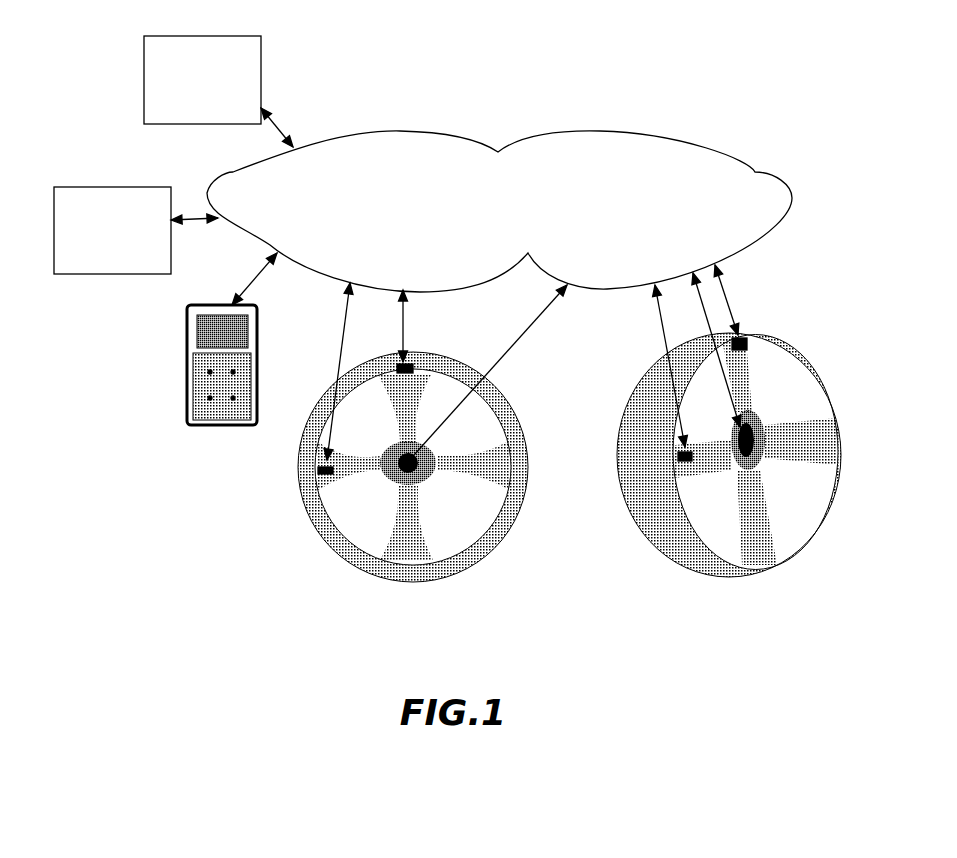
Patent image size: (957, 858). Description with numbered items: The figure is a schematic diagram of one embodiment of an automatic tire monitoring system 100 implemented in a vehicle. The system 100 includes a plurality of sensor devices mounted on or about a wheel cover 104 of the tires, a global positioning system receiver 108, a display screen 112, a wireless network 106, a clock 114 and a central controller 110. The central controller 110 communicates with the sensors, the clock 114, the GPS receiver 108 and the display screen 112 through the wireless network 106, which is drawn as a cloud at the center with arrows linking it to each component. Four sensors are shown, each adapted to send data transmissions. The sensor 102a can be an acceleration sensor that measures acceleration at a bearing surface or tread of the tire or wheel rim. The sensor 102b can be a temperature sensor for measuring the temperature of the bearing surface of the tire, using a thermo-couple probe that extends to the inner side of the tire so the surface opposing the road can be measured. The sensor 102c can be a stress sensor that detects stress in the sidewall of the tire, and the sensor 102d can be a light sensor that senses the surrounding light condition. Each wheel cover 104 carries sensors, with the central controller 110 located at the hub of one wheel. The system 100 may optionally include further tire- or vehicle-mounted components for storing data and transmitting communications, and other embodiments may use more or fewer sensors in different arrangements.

The automatic tire monitoring system 100 is at (105, 112).
The acceleration sensor 102a is at (413, 364).
The temperature sensor 102b is at (318, 469).
The stress sensor 102c is at (752, 342).
The light sensor 102d is at (676, 457).
The wheel cover 104 is at (330, 542).
The wireless network 106 is at (499, 211).
The global positioning system receiver 108 is at (136, 230).
The central controller 110 is at (420, 472).
The display screen 112 is at (195, 427).
The clock 114 is at (218, 91).